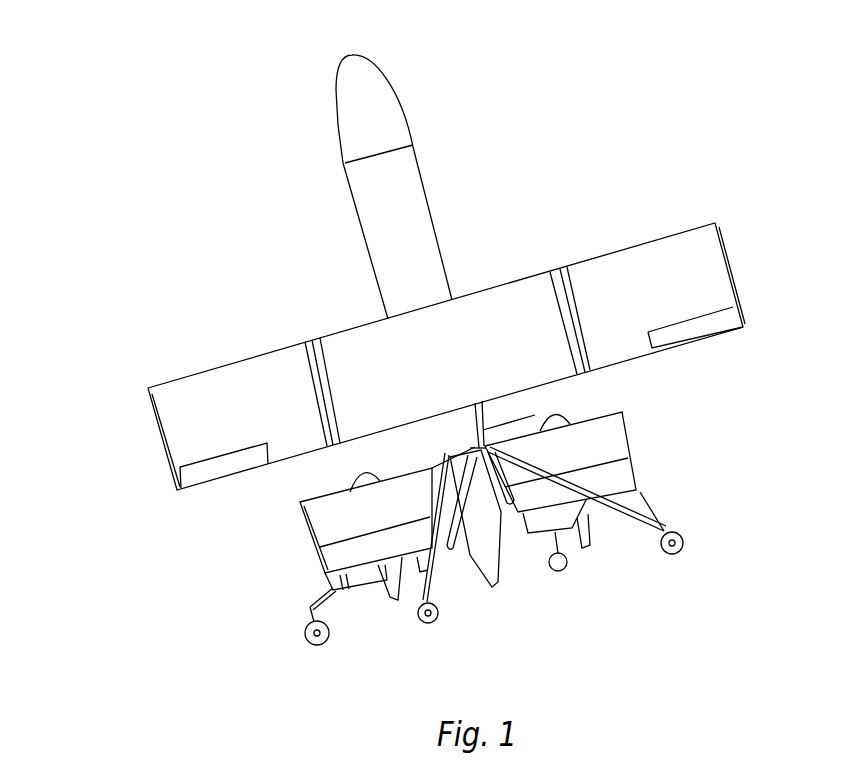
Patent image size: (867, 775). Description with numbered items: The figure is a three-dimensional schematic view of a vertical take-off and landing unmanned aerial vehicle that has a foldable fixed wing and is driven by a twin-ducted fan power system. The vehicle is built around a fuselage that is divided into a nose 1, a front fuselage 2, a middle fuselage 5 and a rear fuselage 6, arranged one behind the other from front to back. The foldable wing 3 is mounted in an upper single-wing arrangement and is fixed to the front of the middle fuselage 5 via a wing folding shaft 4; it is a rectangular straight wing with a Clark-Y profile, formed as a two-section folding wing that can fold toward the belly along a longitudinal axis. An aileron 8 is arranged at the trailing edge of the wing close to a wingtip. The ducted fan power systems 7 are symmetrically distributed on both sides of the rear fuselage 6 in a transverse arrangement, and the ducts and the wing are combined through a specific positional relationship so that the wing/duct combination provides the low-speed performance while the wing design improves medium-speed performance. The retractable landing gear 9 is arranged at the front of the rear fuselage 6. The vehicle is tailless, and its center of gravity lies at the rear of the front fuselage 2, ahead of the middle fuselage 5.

The nose 1 is at (408, 65).
The front fuselage 2 is at (435, 203).
The foldable wing 3 is at (672, 207).
The wing folding shaft 4 is at (312, 315).
The middle fuselage 5 is at (505, 408).
The rear fuselage 6 is at (478, 520).
The ducted fan power system 7 is at (643, 452).
The aileron 8 is at (228, 467).
The retractable landing gear 9 is at (408, 633).